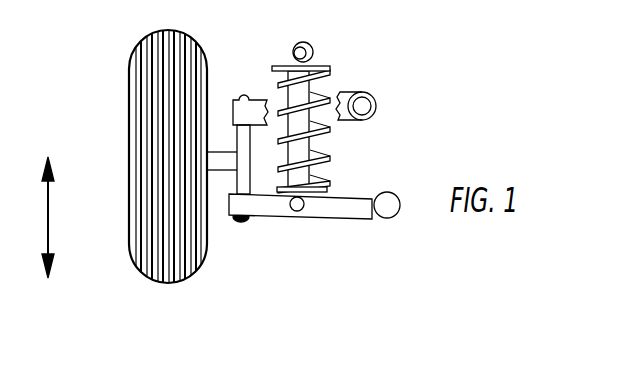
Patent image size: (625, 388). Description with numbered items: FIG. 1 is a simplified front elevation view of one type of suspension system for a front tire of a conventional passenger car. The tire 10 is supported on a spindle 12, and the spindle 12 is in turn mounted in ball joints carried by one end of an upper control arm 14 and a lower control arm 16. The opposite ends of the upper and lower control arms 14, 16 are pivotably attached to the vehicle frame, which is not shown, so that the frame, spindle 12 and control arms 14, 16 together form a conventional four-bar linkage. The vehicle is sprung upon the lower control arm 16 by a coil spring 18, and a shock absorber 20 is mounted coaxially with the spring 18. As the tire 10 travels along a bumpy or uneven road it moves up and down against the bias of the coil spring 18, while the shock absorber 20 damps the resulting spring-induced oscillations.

The tire 10 is at (194, 49).
The spindle 12 is at (236, 186).
The upper control arm 14 is at (349, 92).
The lower control arm 16 is at (342, 207).
The coil spring 18 is at (327, 157).
The shock absorber 20 is at (330, 67).